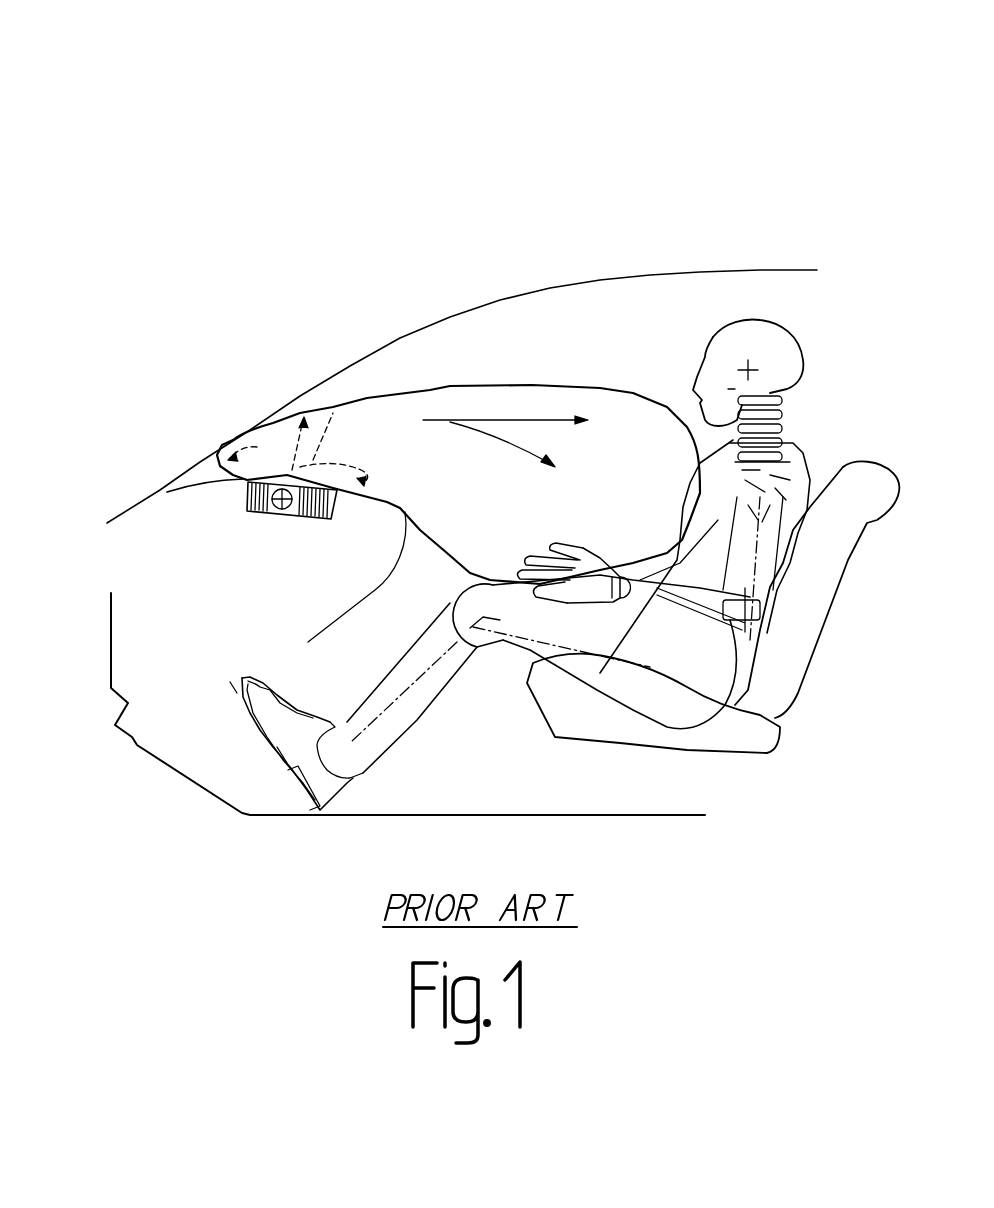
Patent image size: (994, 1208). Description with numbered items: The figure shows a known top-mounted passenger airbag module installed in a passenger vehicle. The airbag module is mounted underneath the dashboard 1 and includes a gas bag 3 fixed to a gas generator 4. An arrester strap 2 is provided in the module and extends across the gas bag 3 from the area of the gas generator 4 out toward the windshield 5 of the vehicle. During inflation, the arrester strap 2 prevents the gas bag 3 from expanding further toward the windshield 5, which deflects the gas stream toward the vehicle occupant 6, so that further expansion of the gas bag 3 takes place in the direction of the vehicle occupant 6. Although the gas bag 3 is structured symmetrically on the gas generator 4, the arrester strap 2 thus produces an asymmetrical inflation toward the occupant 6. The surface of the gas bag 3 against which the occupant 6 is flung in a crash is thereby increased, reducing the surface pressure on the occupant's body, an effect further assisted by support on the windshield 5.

The dashboard 1 is at (385, 504).
The arrester strap 2 is at (270, 444).
The gas bag 3 is at (533, 380).
The gas generator 4 is at (273, 510).
The windshield 5 is at (270, 420).
The vehicle occupant 6 is at (762, 322).